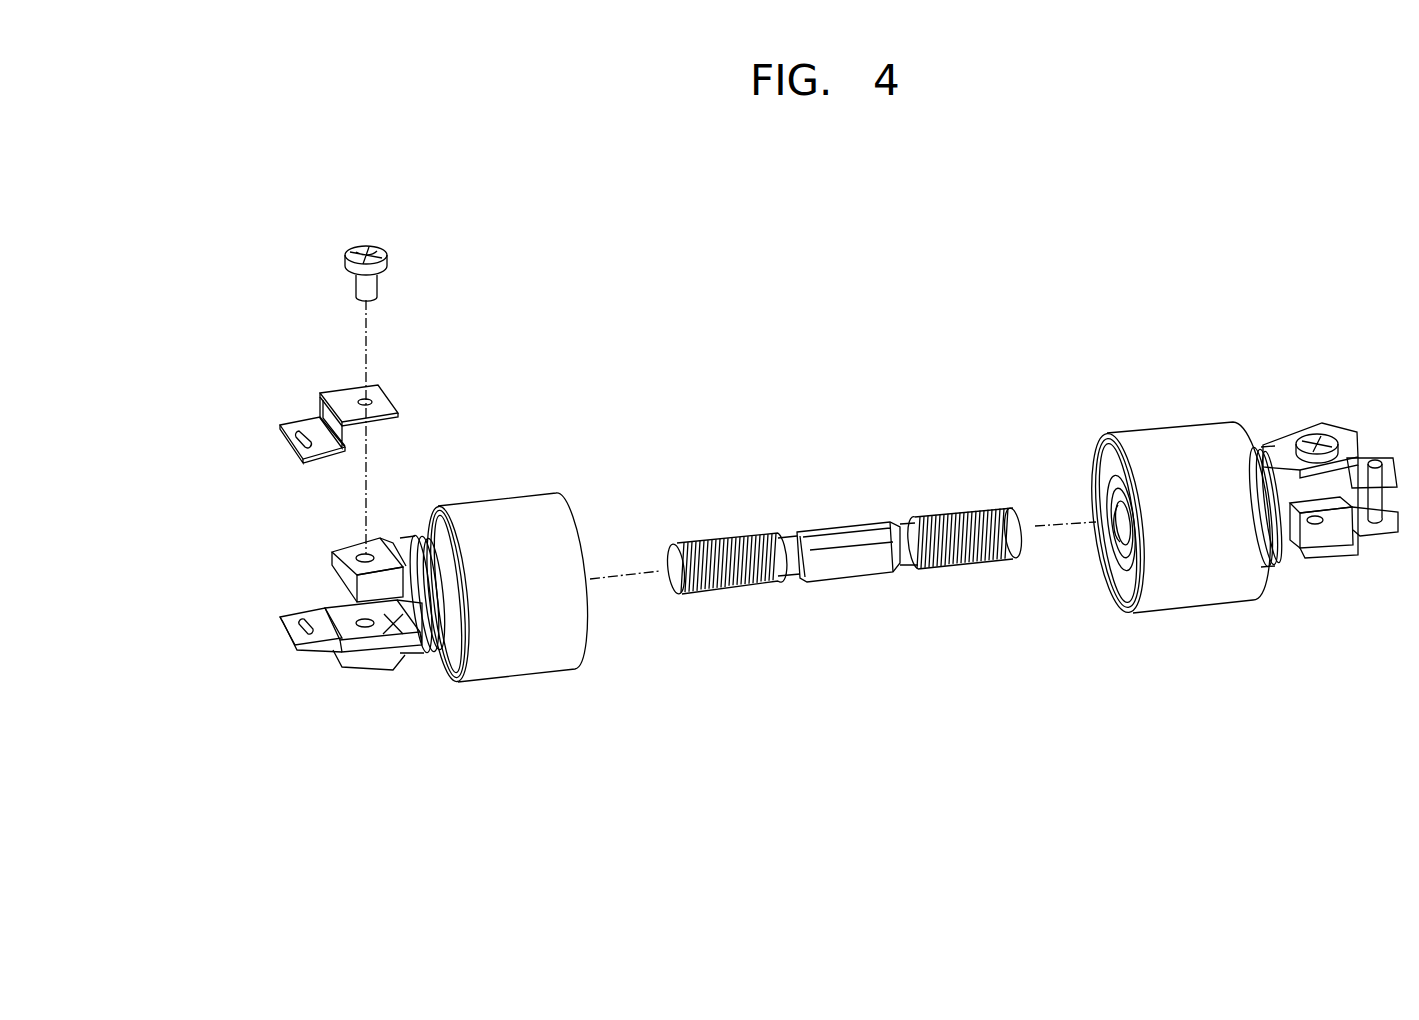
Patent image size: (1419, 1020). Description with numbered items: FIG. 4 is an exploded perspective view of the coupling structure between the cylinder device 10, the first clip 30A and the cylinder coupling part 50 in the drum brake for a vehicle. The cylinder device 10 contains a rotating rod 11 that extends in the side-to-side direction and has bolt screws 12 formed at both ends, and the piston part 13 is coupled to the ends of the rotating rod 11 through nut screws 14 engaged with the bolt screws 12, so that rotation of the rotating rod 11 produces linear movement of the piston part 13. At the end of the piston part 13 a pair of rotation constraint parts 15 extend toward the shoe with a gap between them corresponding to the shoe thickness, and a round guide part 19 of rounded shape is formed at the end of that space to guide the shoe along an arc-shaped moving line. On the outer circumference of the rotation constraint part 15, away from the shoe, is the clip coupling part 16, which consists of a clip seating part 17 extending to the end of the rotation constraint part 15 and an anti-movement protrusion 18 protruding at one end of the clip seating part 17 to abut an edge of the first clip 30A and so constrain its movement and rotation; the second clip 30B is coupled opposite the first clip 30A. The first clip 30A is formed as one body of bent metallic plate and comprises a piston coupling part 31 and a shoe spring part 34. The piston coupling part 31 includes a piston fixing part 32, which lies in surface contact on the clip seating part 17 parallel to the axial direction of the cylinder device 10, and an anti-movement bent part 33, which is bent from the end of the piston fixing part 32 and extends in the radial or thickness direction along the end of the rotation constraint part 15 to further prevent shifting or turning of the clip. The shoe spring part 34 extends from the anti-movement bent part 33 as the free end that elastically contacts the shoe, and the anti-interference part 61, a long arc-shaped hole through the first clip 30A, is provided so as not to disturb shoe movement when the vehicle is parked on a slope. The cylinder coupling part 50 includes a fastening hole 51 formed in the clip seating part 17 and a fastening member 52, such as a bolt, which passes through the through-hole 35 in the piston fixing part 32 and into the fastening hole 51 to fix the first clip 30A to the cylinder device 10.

The cylinder device 10 is at (1154, 471).
The rotating rod 11 is at (858, 573).
The bolt screws 12 is at (727, 596).
The piston part 13 is at (523, 664).
The nut screws 14 is at (1120, 534).
The rotation constraint part 15 is at (829, 592).
The clip coupling part 16 is at (484, 538).
The clip seating part 17 is at (465, 574).
The anti-movement protrusion 18 is at (402, 537).
The round guide part 19 is at (402, 590).
The first clip 30A is at (283, 399).
The second clip 30B is at (328, 656).
The piston coupling part 31 is at (283, 407).
The piston fixing part 32 is at (313, 367).
The anti-movement bent part 33 is at (327, 417).
The shoe spring part 34 is at (279, 462).
The through-hole 35 is at (362, 398).
The cylinder coupling part 50 is at (440, 400).
The fastening hole 51 is at (370, 555).
The fastening member 52 is at (373, 292).
The anti-interference part 61 is at (293, 447).